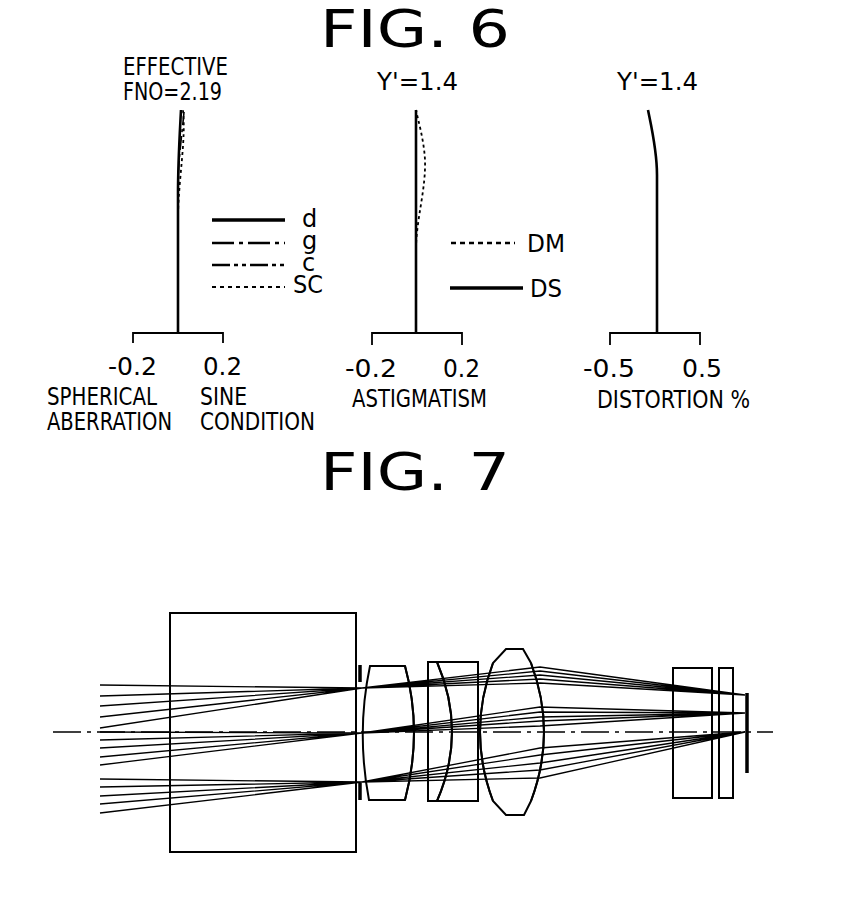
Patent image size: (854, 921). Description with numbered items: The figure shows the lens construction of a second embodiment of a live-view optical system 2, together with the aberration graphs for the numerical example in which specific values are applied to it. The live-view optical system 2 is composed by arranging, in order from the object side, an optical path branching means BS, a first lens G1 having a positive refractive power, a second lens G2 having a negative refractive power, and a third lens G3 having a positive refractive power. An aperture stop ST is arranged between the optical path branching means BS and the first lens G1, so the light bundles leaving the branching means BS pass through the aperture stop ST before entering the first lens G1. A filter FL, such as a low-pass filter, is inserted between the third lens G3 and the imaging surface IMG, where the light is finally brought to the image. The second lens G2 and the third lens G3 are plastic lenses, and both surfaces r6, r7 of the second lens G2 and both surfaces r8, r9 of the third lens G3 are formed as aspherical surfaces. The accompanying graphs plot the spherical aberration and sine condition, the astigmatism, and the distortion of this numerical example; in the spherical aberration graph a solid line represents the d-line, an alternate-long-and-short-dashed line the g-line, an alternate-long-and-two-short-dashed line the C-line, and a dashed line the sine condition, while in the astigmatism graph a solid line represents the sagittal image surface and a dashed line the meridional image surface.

The live-view optical system 2 is at (598, 597).
The optical path branching means BS is at (258, 632).
The aperture stop ST is at (364, 665).
The first lens G1 is at (392, 672).
The second lens G2 is at (451, 672).
The third lens G3 is at (515, 655).
The filter FL is at (727, 675).
The imaging surface IMG is at (746, 773).
The object-side surface of the second lens r6 is at (414, 748).
The image-side surface of the second lens r7 is at (478, 765).
The object-side surface of the third lens r8 is at (486, 792).
The image-side surface of the third lens r9 is at (540, 793).